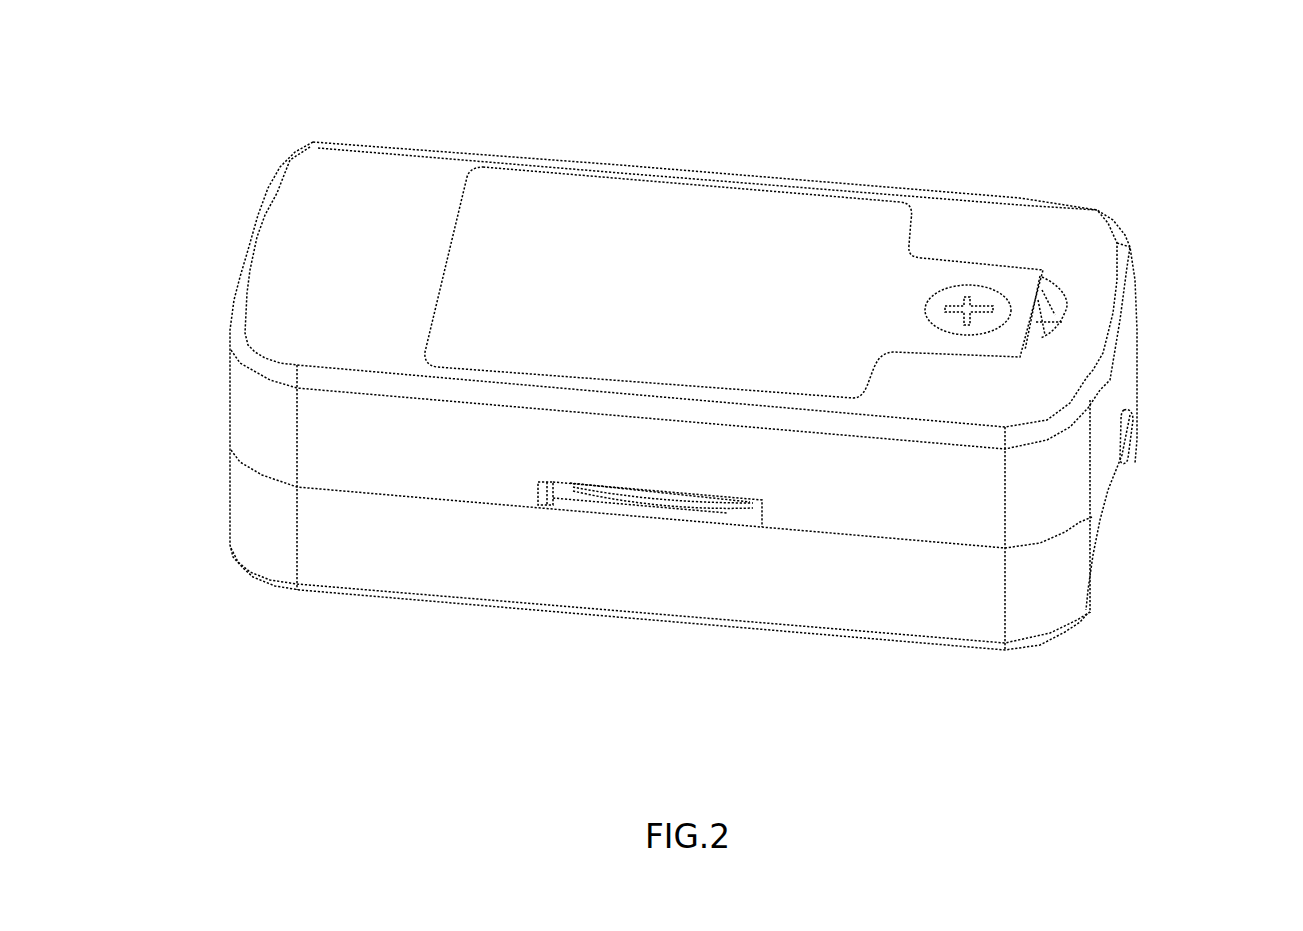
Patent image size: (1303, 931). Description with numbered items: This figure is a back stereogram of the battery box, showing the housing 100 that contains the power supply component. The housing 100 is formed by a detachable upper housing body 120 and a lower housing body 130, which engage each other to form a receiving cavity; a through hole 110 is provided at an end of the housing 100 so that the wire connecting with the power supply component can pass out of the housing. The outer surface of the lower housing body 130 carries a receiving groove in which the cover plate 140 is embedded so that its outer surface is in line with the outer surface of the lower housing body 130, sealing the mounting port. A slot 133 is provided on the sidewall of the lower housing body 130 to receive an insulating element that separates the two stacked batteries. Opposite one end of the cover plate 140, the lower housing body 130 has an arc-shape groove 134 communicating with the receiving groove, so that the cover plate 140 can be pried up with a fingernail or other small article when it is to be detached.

The housing 100 is at (318, 143).
The through hole 110 is at (1138, 437).
The upper housing body 120 is at (1063, 610).
The lower housing body 130 is at (1063, 222).
The slot 133 is at (570, 495).
The arc-shape groove 134 is at (1057, 313).
The cover plate 140 is at (641, 212).